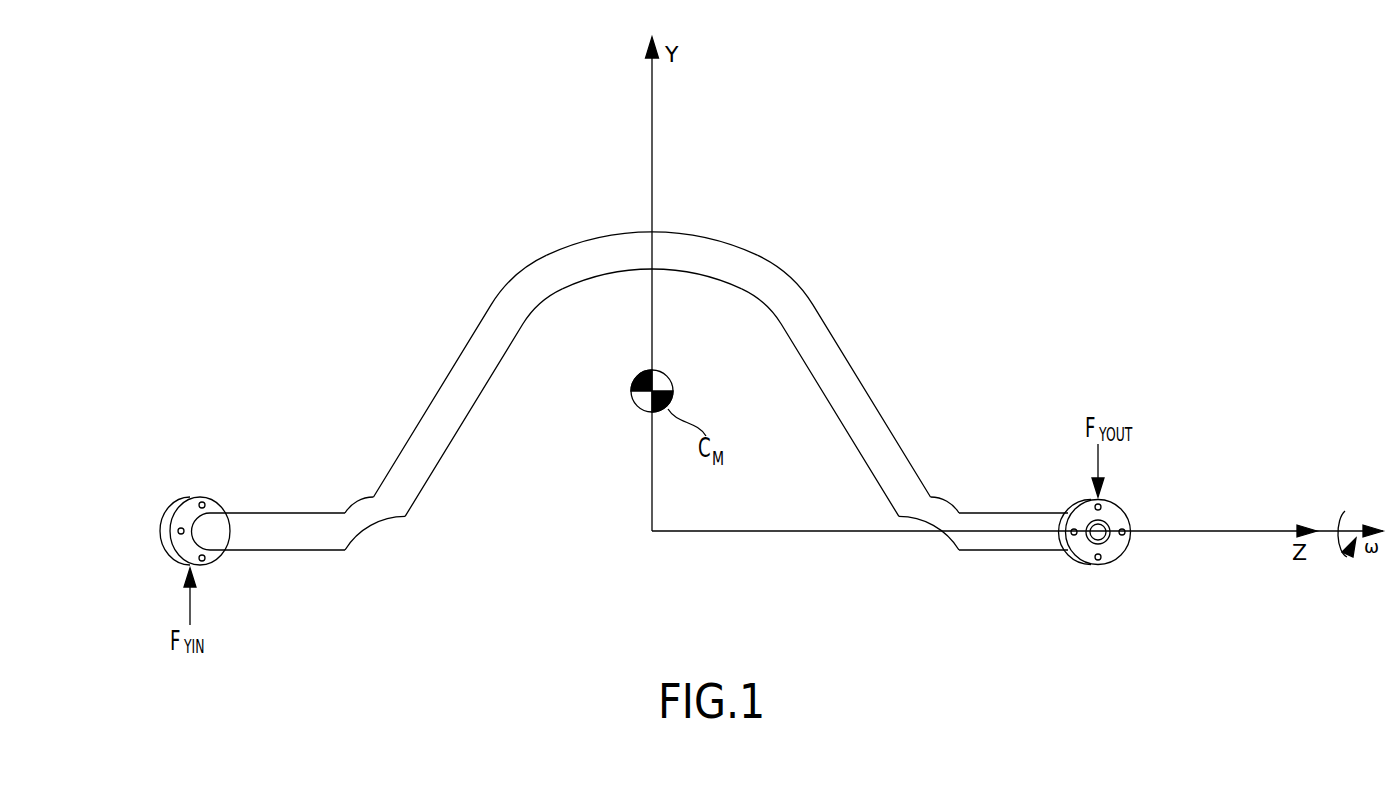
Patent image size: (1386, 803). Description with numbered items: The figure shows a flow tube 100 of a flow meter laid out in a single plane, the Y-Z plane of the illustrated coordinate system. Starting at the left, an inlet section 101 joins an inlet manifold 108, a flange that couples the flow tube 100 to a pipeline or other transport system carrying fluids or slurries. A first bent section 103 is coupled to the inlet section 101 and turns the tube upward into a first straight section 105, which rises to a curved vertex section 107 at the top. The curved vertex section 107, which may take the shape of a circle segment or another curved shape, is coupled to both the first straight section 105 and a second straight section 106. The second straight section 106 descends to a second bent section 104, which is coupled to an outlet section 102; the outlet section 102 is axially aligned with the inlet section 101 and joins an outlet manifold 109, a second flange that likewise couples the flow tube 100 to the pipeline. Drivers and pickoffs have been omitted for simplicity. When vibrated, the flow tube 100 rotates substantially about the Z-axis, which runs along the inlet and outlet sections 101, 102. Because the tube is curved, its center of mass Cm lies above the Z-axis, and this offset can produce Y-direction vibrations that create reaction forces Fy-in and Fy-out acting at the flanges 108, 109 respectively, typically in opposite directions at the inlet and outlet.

The flow tube 100 is at (370, 254).
The inlet section 101 is at (241, 551).
The outlet section 102 is at (1066, 552).
The first bent section 103 is at (395, 531).
The second bent section 104 is at (919, 534).
The first straight section 105 is at (432, 401).
The second straight section 106 is at (860, 378).
The curved vertex section 107 is at (710, 238).
The inlet manifold 108 is at (170, 541).
The outlet manifold 109 is at (1114, 553).